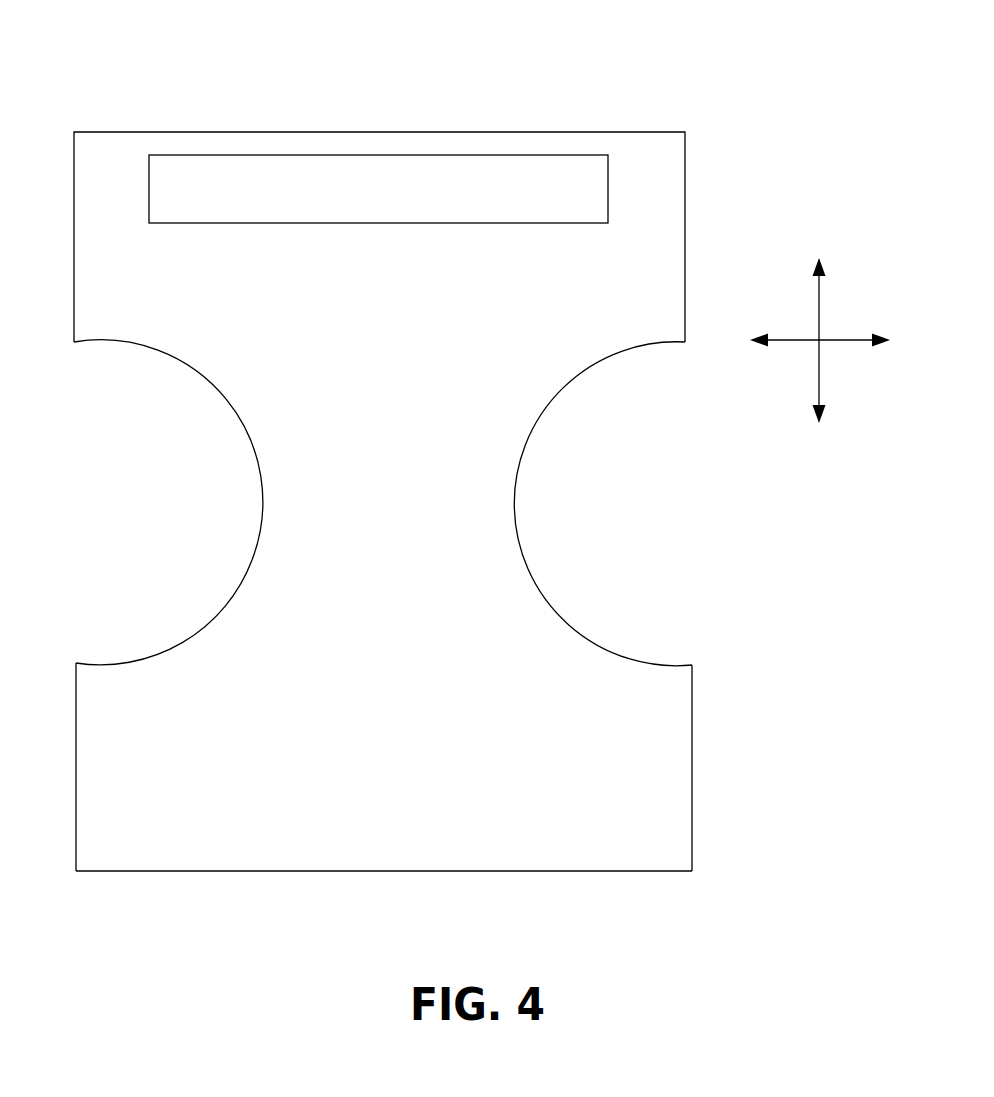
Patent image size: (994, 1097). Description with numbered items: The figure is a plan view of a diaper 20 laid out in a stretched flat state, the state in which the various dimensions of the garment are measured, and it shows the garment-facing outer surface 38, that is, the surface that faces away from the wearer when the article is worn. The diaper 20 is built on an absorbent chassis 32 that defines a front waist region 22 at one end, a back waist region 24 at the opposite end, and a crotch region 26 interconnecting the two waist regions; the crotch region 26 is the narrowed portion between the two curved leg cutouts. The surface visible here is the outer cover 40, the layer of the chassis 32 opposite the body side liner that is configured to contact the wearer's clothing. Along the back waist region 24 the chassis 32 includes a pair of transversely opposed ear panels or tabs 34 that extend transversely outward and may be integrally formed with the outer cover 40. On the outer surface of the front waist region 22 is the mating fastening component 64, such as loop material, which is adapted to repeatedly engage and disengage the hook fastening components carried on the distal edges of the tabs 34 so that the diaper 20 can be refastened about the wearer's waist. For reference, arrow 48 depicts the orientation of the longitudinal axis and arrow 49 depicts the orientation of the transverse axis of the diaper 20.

The diaper 20 is at (433, 476).
The front waist region 22 is at (660, 178).
The back waist region 24 is at (648, 837).
The crotch region 26 is at (475, 503).
The absorbent chassis 32 is at (223, 370).
The ear panels or tabs 34 is at (662, 707).
The garment-facing outer surface 38 is at (172, 663).
The outer cover 40 is at (410, 780).
The longitudinal axis arrow 48 is at (820, 302).
The transverse axis arrow 49 is at (847, 343).
The mating fastening components 64 is at (300, 188).